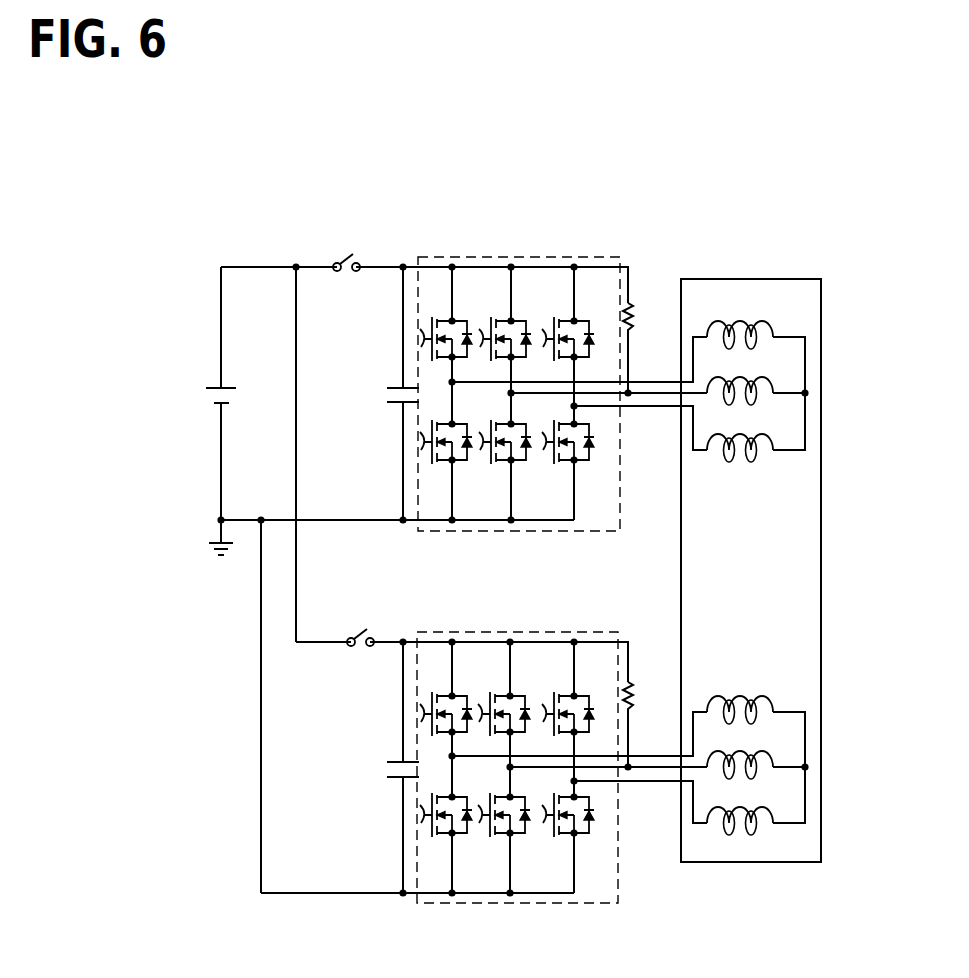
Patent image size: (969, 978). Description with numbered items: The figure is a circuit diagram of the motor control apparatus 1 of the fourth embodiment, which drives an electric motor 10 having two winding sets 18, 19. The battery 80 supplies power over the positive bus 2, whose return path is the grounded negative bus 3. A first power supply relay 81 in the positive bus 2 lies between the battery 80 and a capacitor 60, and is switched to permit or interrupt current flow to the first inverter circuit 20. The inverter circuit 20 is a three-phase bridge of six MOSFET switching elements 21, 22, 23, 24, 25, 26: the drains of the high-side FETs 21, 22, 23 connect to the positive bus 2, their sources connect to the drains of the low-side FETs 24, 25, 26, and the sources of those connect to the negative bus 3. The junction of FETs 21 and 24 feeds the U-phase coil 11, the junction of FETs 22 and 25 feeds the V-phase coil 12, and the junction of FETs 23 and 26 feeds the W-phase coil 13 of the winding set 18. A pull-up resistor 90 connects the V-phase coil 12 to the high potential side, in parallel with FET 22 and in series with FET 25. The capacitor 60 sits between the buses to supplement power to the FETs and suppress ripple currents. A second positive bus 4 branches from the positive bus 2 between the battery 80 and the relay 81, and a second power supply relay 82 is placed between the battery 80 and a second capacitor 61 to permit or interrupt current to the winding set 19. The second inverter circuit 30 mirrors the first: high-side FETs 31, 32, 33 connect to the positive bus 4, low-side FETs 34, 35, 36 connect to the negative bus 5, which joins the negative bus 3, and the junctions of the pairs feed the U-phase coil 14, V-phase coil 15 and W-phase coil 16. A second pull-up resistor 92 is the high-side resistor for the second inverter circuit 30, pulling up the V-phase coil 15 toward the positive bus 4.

The motor control apparatus 1 is at (477, 226).
The positive bus 2 is at (378, 264).
The negative bus 3 is at (324, 522).
The positive bus 4 is at (323, 641).
The negative bus 5 is at (329, 897).
The electric motor 10 is at (818, 279).
The U-phase coil 11 is at (763, 325).
The V-phase coil 12 is at (763, 380).
The W-phase coil 13 is at (763, 437).
The U-phase coil 14 is at (763, 700).
The V-phase coil 15 is at (763, 756).
The W-phase coil 16 is at (763, 812).
The winding set 18 is at (752, 415).
The winding set 19 is at (752, 788).
The inverter circuit 20 is at (538, 256).
The switching element 21 is at (455, 320).
The switching element 22 is at (515, 320).
The switching element 23 is at (577, 320).
The switching element 24 is at (462, 465).
The switching element 25 is at (520, 465).
The switching element 26 is at (583, 465).
The inverter circuit 30 is at (538, 631).
The switching element 31 is at (455, 695).
The switching element 32 is at (514, 695).
The switching element 33 is at (577, 695).
The switching element 34 is at (462, 838).
The switching element 35 is at (520, 838).
The switching element 36 is at (583, 838).
The capacitor 60 is at (398, 386).
The capacitor 61 is at (398, 760).
The battery 80 is at (210, 386).
The power supply relay 81 is at (333, 263).
The power supply relay 82 is at (372, 637).
The pull-up resistor 90 is at (632, 308).
The pull-up resistor 92 is at (632, 682).